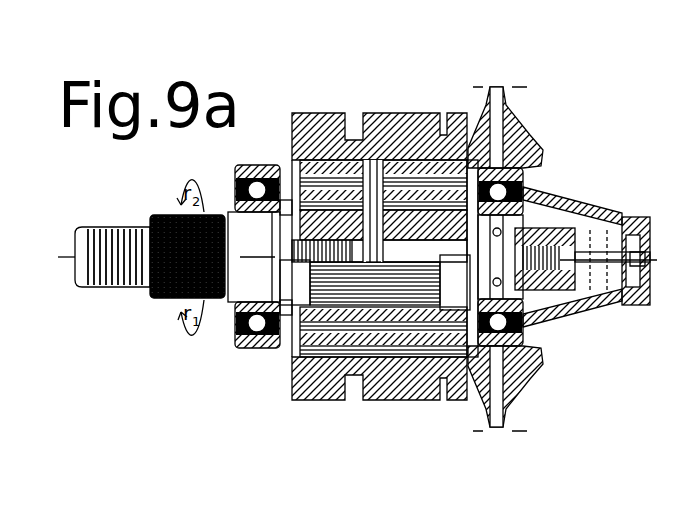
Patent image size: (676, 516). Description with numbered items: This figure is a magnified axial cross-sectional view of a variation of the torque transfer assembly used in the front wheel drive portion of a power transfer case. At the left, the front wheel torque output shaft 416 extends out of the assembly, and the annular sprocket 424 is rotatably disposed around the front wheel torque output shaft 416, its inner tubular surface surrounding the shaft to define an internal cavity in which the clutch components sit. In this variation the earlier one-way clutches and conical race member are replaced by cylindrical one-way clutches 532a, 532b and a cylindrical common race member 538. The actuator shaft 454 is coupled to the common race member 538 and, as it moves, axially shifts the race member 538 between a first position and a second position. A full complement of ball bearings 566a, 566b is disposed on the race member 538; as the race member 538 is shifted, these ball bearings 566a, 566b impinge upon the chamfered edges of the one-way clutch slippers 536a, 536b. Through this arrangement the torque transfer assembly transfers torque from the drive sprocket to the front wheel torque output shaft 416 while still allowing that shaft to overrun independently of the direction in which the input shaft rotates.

The front wheel torque output shaft 416 is at (118, 288).
The annular sprocket 424 is at (383, 125).
The actuator shaft 454 is at (358, 163).
The cylindrical one-way clutch 532b is at (360, 160).
The cylindrical one-way clutch 532a is at (495, 123).
The one-way clutch slipper 536a is at (507, 392).
The one-way clutch slipper 536b is at (357, 360).
The cylindrical common race member 538 is at (290, 357).
The ball bearings 566a is at (410, 357).
The ball bearings 566b is at (370, 330).